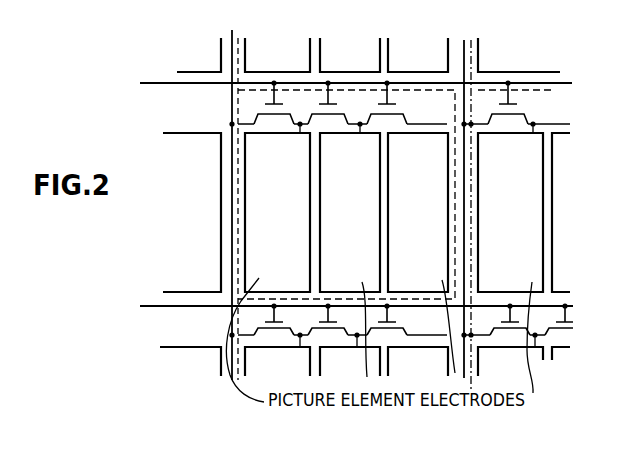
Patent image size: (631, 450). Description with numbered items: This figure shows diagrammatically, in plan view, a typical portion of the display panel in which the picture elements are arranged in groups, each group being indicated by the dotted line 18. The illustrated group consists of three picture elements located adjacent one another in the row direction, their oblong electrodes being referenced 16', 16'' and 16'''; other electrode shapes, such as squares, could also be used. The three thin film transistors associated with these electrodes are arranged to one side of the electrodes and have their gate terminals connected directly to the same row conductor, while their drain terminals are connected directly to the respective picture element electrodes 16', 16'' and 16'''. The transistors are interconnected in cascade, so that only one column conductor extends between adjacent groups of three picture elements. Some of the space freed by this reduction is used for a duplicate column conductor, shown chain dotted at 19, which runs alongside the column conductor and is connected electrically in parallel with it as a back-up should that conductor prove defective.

The picture element electrode 16' is at (277, 212).
The picture element electrode 16'' is at (350, 212).
The picture element electrode 16''' is at (418, 212).
The dotted line 18 is at (238, 199).
The duplicate column conductor 19 is at (470, 55).